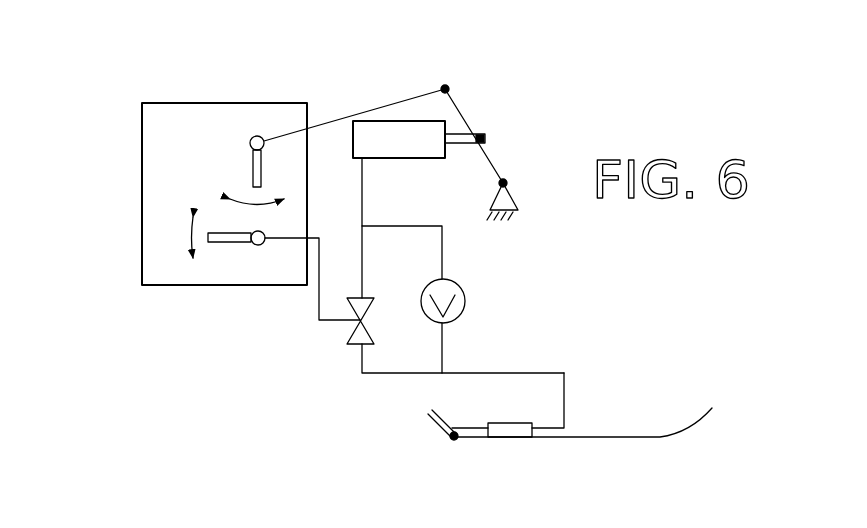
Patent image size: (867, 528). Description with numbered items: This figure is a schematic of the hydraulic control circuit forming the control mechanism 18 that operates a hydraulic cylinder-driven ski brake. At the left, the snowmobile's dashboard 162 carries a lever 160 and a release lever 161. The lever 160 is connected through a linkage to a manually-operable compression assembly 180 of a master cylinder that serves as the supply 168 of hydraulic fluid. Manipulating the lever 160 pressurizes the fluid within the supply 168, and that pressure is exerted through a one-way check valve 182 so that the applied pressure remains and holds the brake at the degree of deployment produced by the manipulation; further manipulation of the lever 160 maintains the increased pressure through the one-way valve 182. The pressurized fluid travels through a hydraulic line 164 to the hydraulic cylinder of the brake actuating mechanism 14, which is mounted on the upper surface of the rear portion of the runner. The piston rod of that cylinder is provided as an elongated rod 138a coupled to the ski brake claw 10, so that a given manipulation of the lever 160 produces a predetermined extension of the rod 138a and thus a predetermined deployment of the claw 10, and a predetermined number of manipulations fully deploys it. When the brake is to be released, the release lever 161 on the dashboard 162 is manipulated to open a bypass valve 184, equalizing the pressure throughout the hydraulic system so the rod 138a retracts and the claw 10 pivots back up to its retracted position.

The control mechanism 18 is at (284, 86).
The dashboard 162 is at (150, 125).
The lever 160 is at (251, 153).
The release lever 161 is at (240, 246).
The manually-operable compression assembly 180 is at (425, 92).
The supply of hydraulic fluid 168 is at (440, 131).
The one-way check valve 182 is at (464, 292).
The bypass valve 184 is at (357, 347).
The hydraulic line 164 is at (547, 370).
The brake actuating mechanism 14 is at (521, 447).
The ski brake claw 10 is at (428, 440).
The elongated rod 138a is at (477, 438).